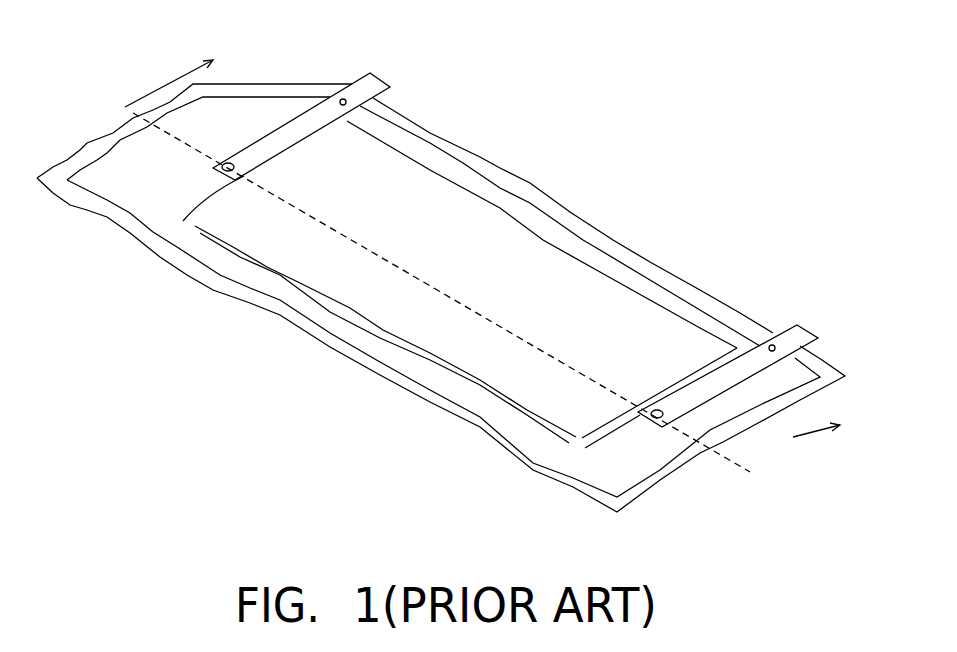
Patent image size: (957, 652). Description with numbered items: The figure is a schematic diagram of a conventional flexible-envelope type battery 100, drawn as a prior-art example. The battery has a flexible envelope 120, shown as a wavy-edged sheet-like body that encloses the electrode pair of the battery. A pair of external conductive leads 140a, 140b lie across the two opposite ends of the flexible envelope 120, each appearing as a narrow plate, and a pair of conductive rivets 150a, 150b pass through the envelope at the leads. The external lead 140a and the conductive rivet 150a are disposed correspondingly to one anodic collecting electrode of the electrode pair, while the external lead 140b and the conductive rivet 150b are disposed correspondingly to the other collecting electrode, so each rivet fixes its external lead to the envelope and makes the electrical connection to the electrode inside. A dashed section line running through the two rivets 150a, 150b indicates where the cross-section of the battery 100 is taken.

The flexible-envelope battery 100 is at (445, 281).
The flexible envelope 120 is at (522, 212).
The external conductive lead 140a is at (775, 346).
The external conductive lead 140b is at (341, 99).
The conductive rivet 150a is at (657, 418).
The conductive rivet 150b is at (228, 163).